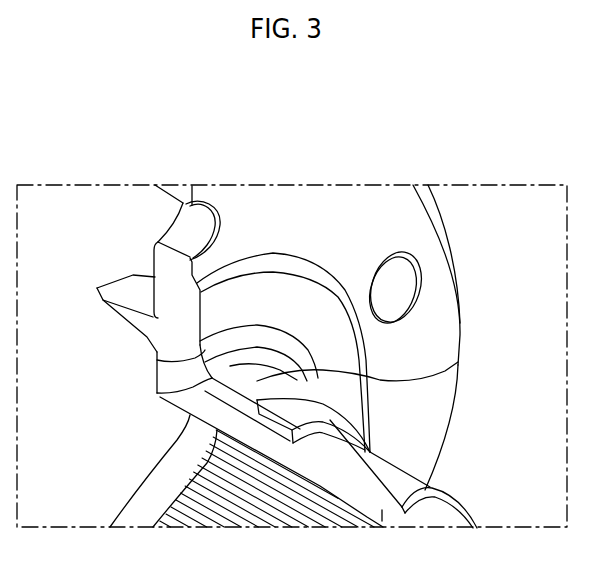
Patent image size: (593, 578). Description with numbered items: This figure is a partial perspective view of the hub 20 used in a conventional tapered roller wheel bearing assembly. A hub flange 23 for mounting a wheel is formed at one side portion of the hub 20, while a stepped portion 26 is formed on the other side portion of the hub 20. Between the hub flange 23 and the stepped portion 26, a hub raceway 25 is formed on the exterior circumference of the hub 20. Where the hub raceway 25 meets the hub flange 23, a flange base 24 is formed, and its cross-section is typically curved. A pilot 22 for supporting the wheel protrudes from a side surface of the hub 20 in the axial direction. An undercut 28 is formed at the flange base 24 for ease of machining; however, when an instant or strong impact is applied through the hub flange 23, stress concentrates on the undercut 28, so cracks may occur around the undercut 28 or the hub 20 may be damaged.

The hub 20 is at (478, 241).
The pilot 22 is at (102, 300).
The hub flange 23 is at (167, 257).
The flange base 24 is at (157, 357).
The hub raceway 25 is at (447, 370).
The stepped portion 26 is at (436, 458).
The undercut 28 is at (158, 393).